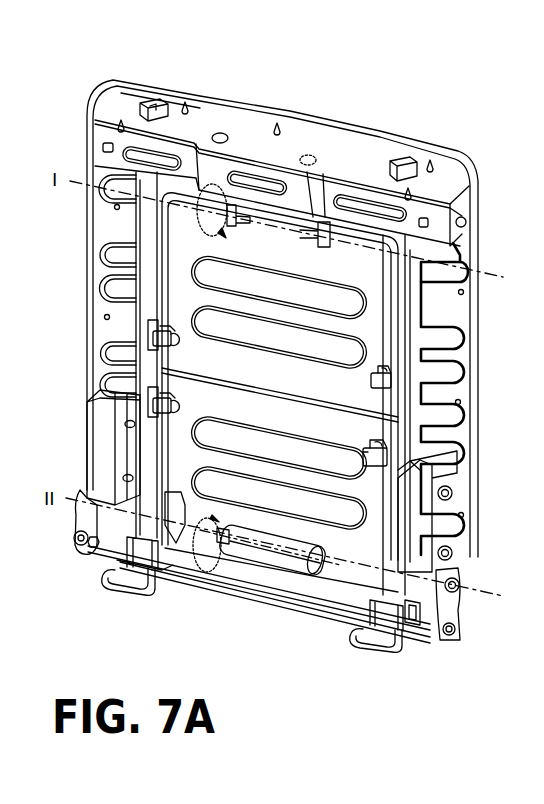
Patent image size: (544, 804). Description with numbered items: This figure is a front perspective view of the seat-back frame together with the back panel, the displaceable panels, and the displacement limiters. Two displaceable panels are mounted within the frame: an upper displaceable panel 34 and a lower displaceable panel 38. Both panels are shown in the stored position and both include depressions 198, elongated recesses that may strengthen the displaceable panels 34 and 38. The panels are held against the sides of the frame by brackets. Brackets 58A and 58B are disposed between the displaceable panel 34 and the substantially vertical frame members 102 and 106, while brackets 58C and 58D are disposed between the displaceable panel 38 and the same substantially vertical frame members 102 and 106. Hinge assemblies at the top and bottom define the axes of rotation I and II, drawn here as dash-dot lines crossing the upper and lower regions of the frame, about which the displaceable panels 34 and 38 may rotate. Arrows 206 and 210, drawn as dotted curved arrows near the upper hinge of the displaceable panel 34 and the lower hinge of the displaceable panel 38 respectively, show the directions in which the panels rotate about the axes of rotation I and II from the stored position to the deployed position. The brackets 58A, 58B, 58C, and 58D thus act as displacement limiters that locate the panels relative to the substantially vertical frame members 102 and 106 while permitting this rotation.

The displaceable panel 34 is at (352, 262).
The displaceable panel 38 is at (357, 542).
The bracket 58A is at (152, 334).
The bracket 58B is at (382, 388).
The bracket 58C is at (148, 398).
The bracket 58D is at (380, 460).
The substantially vertical frame member 102 is at (148, 264).
The substantially vertical frame member 106 is at (395, 273).
The depressions 198 is at (337, 349).
The arrow 206 is at (200, 195).
The arrow 210 is at (193, 540).